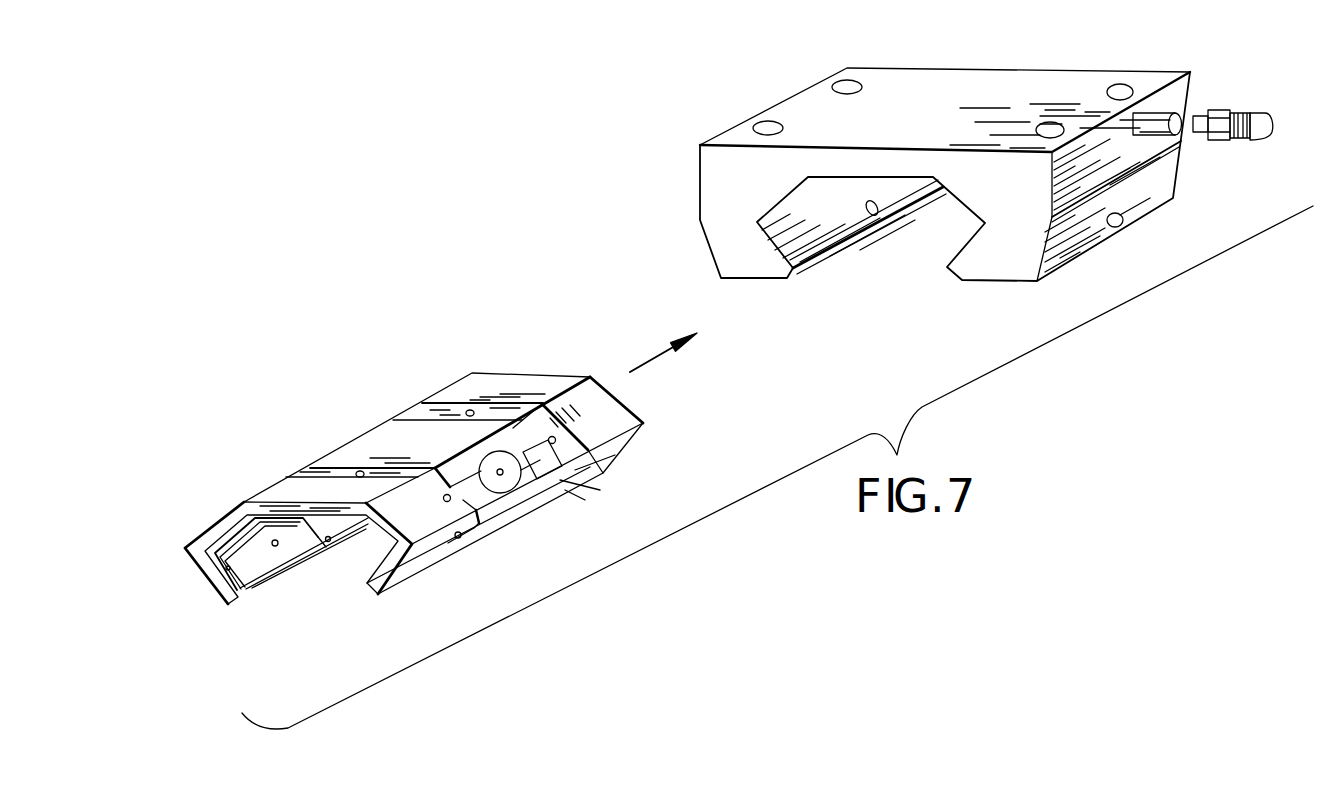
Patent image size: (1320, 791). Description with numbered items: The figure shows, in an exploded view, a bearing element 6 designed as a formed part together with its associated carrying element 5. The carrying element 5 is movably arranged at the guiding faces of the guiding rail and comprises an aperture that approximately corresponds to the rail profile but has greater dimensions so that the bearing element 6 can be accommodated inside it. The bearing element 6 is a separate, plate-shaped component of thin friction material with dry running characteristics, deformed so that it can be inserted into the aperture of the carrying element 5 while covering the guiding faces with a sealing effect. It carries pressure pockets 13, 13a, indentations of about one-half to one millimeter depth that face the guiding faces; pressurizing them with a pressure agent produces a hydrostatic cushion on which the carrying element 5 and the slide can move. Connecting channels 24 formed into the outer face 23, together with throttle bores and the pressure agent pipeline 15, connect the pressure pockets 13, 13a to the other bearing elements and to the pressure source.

The carrying element 5 is at (985, 83).
The pressure agent pipeline 15 is at (1160, 135).
The bearing element 6 is at (410, 506).
The connecting channel 24 is at (307, 474).
The outer face 23 is at (452, 526).
The pressure pocket 13 is at (250, 522).
The pressure pocket 13a is at (338, 520).